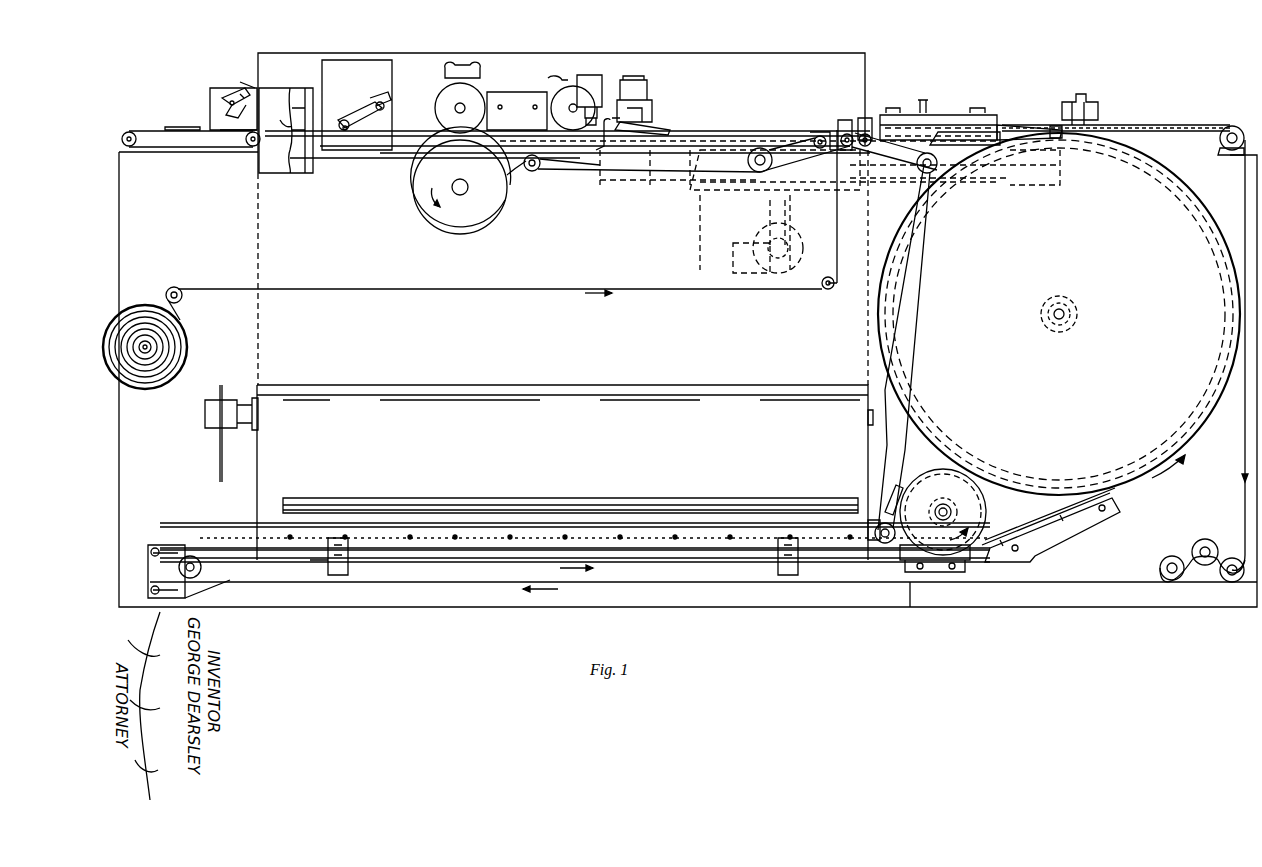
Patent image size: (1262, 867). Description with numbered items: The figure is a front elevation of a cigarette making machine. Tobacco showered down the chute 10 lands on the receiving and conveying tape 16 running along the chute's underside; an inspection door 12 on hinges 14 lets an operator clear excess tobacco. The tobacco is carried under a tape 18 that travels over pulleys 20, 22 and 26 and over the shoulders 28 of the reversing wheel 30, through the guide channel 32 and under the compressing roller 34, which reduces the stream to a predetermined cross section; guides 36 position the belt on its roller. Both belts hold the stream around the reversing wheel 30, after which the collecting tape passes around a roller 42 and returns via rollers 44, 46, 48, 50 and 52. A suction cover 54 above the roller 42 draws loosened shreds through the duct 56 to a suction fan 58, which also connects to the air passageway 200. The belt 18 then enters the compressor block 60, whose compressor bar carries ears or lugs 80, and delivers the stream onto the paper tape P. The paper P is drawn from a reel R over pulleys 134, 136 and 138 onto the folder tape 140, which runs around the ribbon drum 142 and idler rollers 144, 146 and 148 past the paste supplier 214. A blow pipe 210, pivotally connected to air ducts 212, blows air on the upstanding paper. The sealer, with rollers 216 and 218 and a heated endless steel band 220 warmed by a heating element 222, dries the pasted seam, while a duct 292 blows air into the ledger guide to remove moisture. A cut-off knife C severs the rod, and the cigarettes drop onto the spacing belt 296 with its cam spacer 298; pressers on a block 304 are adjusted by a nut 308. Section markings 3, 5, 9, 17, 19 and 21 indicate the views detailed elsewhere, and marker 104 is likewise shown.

The chute 10 is at (356, 465).
The inspection door 12 is at (540, 505).
The hinges 14 is at (338, 580).
The tobacco receiving and conveying tape 16 is at (282, 588).
The roller 52 is at (178, 553).
The spacing belt 296 is at (150, 145).
The block 304 is at (190, 120).
The pulley 22 is at (205, 120).
The cam spacer 298 is at (226, 86).
The nut 308 is at (255, 86).
The cut-off knife C is at (303, 90).
The duct 292 is at (372, 90).
The section line 21 is at (330, 163).
The roller 216 is at (460, 107).
The endless steel band 220 is at (442, 94).
The heating element 222 is at (520, 92).
The section line 5 is at (508, 66).
The roller 218 is at (571, 103).
The solenoid 17 is at (662, 66).
The paste supplier 214 is at (630, 85).
The blow pipe 210 is at (645, 120).
The air ducts 212 is at (612, 146).
The section line 19 is at (578, 168).
The ribbon drum 142 is at (492, 210).
The idler roller 144 is at (540, 163).
The folder tape 140 is at (515, 180).
The idler roller 146 is at (752, 170).
The idler roller 148 is at (815, 130).
The pulley 138 is at (845, 130).
The air passageway 200 is at (690, 182).
The shaft 104 is at (856, 175).
The suction fan 58 is at (732, 258).
The pulley 136 is at (822, 282).
The paper tape P is at (497, 292).
The pulley 134 is at (173, 287).
The reel R is at (180, 372).
The pulley 26 is at (870, 130).
The ears or lugs 80 is at (905, 112).
The compressor block 60 is at (1018, 130).
The suction cover 54 is at (1085, 110).
The roller 42 is at (1055, 128).
The roller 44 is at (1232, 125).
The duct 56 is at (1056, 182).
The shoulders 28 is at (1178, 196).
The reversing wheel 30 is at (1059, 314).
The section line 9 is at (1155, 497).
The tape 18 is at (872, 418).
The pulley 20 is at (865, 520).
The guides 36 is at (878, 522).
The compressing roller 34 is at (970, 502).
The guide channel 32 is at (1050, 518).
The roller 48 is at (1205, 540).
The roller 50 is at (1163, 582).
The roller 46 is at (1234, 583).
The section line 3 is at (395, 573).